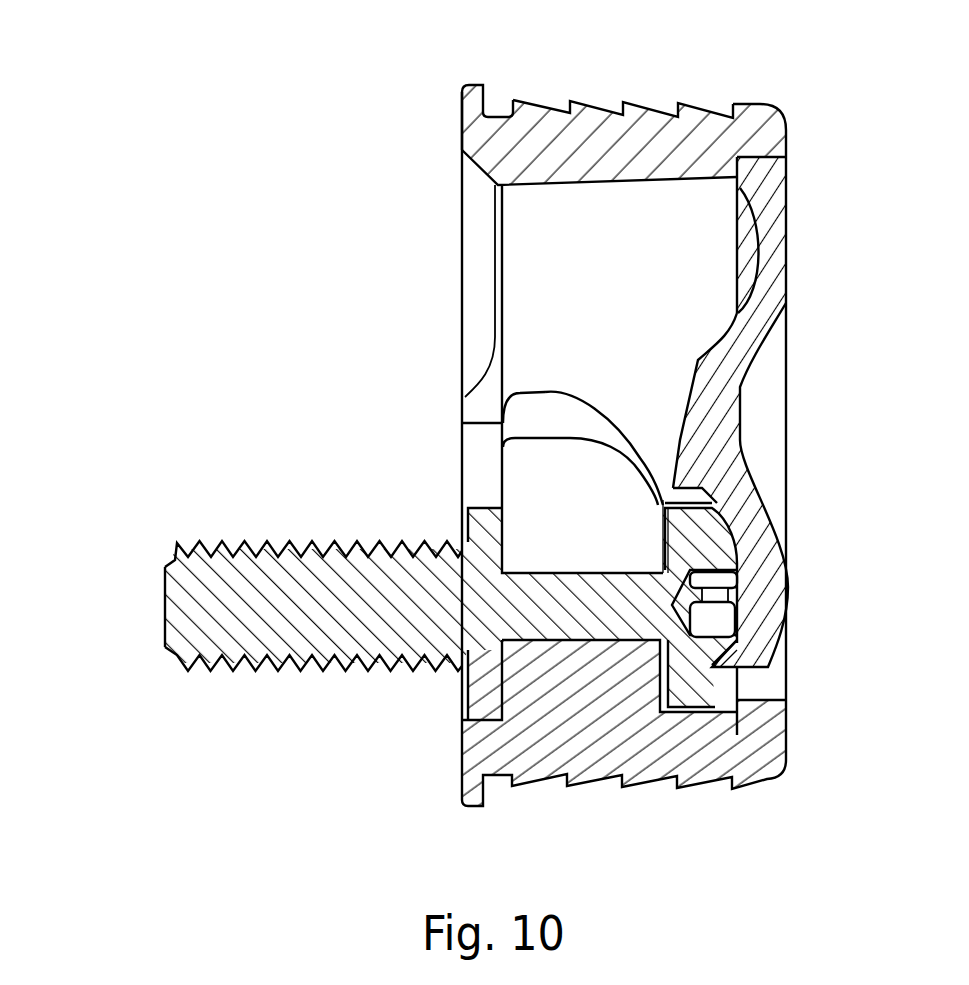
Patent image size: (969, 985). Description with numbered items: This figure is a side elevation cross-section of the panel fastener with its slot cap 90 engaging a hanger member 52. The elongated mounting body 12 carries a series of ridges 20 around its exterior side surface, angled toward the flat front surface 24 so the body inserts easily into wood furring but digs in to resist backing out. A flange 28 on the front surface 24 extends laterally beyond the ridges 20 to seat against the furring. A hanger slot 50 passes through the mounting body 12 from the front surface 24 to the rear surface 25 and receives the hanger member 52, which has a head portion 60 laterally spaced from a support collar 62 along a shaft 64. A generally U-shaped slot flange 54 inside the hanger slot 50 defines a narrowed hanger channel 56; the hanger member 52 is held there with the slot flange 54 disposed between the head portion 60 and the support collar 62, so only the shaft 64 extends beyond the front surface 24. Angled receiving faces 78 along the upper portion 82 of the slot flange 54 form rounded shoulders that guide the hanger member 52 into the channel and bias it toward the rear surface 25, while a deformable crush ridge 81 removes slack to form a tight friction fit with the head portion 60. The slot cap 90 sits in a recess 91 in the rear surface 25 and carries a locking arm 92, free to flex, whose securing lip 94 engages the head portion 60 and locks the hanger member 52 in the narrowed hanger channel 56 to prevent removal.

The elongated mounting body 12 is at (667, 140).
The ridges 20 is at (582, 100).
The front surface 24 is at (462, 123).
The rear surface 25 is at (787, 127).
The flange 28 is at (490, 93).
The hanger slot 50 is at (510, 207).
The hanger member 52 is at (300, 680).
The slot flange 54 is at (503, 452).
The narrowed hanger channel 56 is at (515, 500).
The head portion 60 is at (737, 690).
The support collar 62 is at (468, 690).
The shaft 64 is at (160, 601).
The angled receiving face 78 is at (538, 391).
The crush ridge 81 is at (661, 495).
The upper portion 82 is at (586, 399).
The slot cap 90 is at (790, 215).
The recess 91 is at (746, 278).
The locking arm 92 is at (787, 311).
The securing lip 94 is at (690, 487).